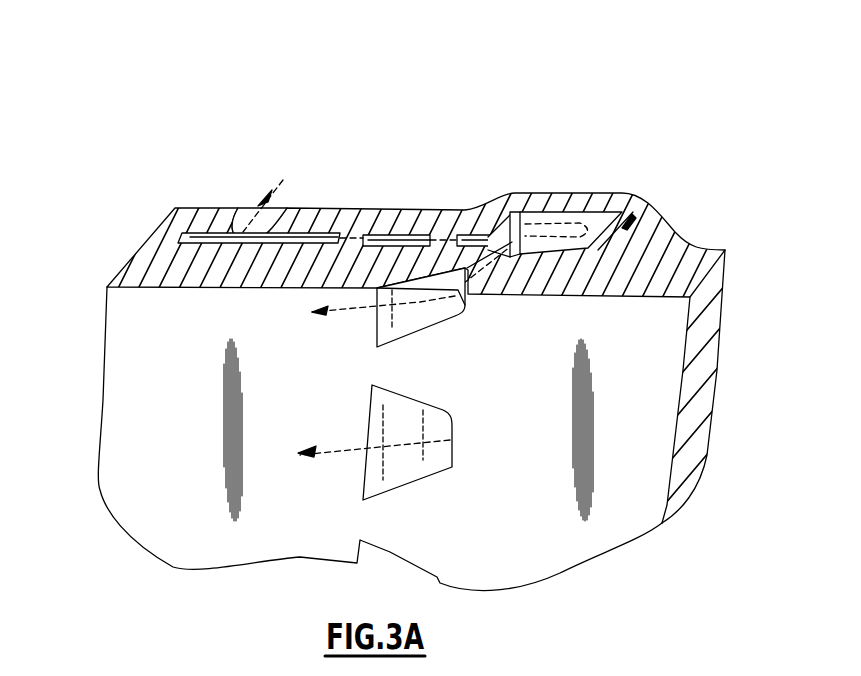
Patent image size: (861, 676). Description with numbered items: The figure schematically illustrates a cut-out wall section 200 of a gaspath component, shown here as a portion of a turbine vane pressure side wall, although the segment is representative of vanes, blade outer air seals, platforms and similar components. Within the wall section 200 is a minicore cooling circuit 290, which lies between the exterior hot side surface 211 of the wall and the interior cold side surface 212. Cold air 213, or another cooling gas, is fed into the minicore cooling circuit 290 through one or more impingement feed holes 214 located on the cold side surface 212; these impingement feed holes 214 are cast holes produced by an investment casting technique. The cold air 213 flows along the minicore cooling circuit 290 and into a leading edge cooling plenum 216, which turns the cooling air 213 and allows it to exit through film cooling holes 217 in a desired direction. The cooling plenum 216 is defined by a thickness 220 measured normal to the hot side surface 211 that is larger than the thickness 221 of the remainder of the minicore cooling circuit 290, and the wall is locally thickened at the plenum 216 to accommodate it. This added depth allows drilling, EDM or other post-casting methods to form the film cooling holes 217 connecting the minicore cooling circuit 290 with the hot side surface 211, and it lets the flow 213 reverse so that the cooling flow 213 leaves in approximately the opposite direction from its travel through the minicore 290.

The wall section 200 is at (318, 128).
The hot side surface 211 is at (157, 517).
The cold side surface 212 is at (358, 210).
The cold air 213 is at (262, 200).
The impingement feed holes 214 is at (240, 222).
The leading edge cooling plenum 216 is at (533, 220).
The film cooling holes 217 is at (403, 318).
The thickness 220 is at (620, 228).
The thickness 221 is at (407, 237).
The minicore cooling circuit 290 is at (200, 237).